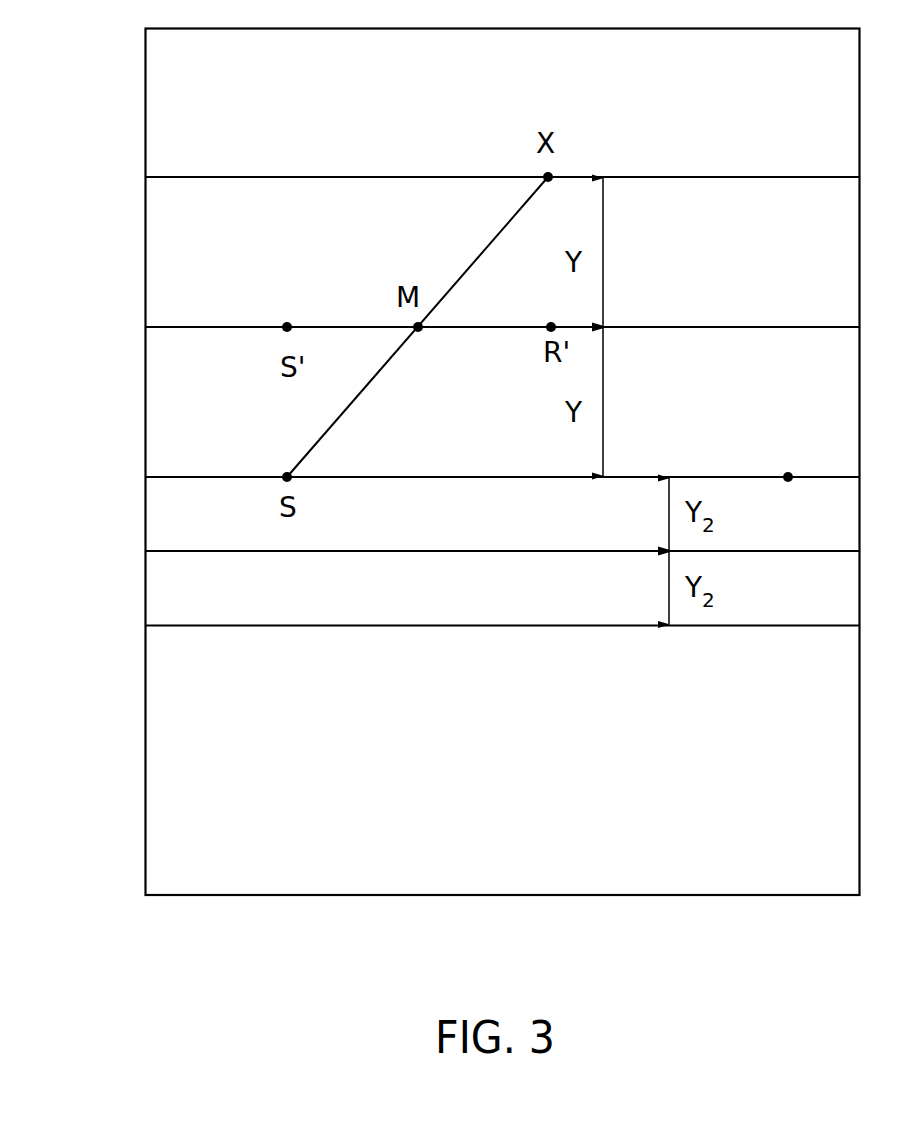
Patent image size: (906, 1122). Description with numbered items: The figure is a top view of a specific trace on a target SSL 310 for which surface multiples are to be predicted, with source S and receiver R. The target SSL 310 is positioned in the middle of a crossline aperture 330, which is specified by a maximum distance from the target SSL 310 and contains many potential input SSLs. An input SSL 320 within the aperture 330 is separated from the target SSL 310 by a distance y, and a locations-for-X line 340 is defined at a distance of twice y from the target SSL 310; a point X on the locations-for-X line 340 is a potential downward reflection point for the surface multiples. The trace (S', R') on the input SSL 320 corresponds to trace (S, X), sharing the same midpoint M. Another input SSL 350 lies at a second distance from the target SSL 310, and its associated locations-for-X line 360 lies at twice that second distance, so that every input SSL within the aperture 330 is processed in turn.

The crossline aperture 330 is at (146, 790).
The locations-for-X line 340 is at (176, 177).
The input SSL 320 is at (176, 327).
The target SSL 310 is at (176, 477).
The input SSL 350 is at (176, 551).
The locations-for-X line 360 is at (176, 626).